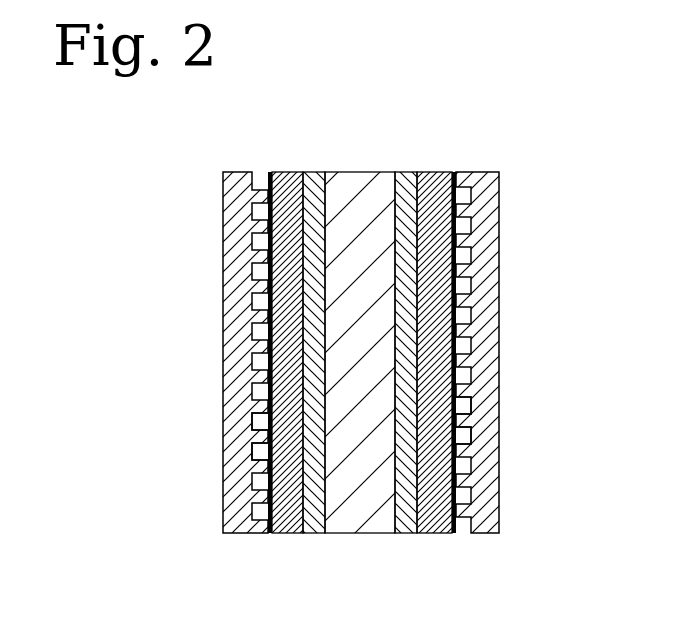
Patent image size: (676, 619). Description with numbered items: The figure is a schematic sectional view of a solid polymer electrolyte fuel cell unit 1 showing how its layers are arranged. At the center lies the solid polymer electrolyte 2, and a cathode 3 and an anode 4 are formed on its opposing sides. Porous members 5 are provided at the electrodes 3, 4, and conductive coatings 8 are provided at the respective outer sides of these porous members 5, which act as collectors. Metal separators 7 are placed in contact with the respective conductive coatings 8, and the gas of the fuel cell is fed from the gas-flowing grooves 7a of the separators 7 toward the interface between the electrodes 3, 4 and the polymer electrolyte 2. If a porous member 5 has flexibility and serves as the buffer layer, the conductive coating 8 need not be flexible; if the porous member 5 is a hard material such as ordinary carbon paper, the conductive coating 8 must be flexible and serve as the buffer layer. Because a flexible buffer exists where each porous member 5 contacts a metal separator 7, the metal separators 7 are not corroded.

The cell unit 1 is at (368, 352).
The solid polymer electrolyte 2 is at (356, 185).
The cathode 3 is at (318, 183).
The anode 4 is at (407, 183).
The porous member 5 is at (288, 183).
The metal separator 7 is at (238, 263).
The gas-flowing groove 7a is at (260, 423).
The conductive coating 8 is at (266, 181).